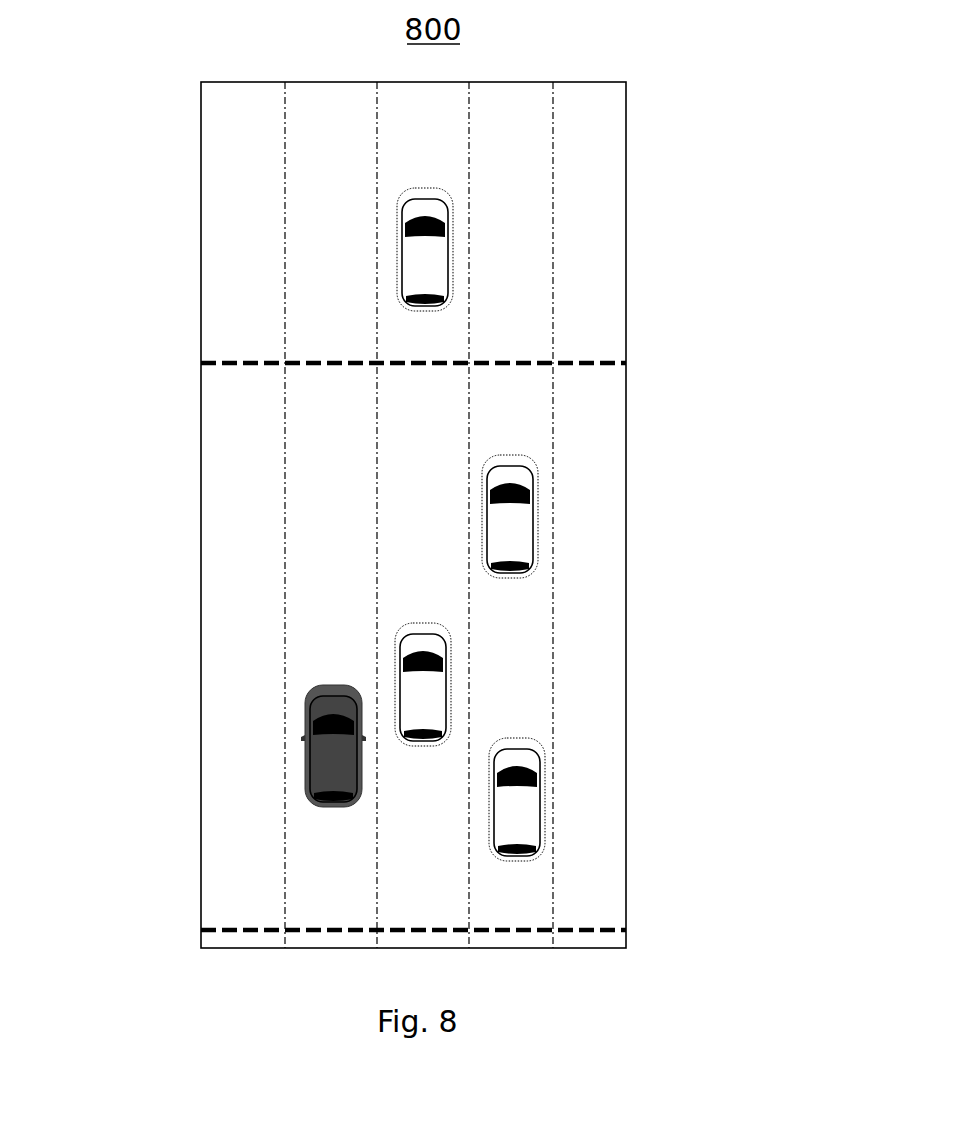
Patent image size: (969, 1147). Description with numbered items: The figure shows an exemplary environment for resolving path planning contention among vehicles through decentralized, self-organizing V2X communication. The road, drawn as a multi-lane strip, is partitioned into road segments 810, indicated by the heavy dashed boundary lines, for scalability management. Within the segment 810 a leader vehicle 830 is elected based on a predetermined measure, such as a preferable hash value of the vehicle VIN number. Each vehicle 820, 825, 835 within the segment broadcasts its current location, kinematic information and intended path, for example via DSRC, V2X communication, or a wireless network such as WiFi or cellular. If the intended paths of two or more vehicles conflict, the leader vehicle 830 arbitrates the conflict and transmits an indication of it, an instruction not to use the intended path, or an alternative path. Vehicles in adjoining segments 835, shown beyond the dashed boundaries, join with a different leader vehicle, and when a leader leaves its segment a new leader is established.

The road segment 810 is at (524, 515).
The vehicle 820 is at (460, 522).
The vehicle 825 is at (388, 638).
The leader vehicle 830 is at (293, 747).
The vehicles in adjoining segments 835 is at (463, 265).